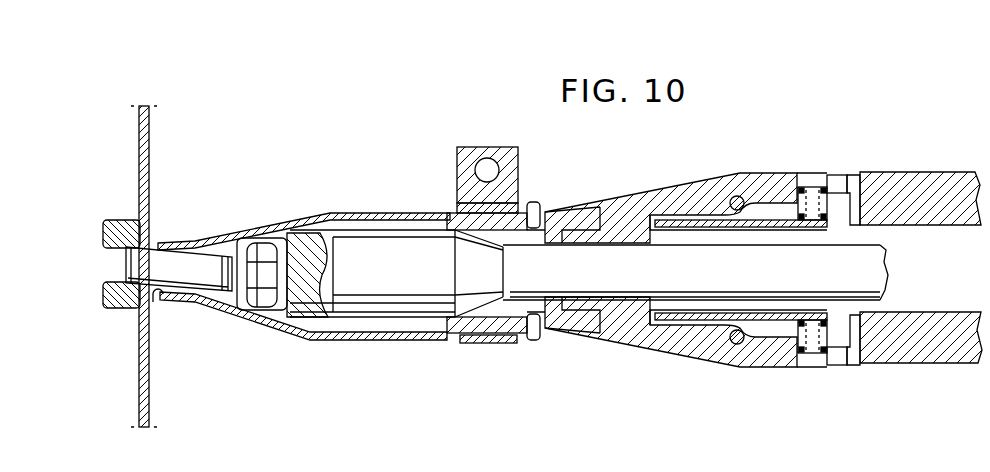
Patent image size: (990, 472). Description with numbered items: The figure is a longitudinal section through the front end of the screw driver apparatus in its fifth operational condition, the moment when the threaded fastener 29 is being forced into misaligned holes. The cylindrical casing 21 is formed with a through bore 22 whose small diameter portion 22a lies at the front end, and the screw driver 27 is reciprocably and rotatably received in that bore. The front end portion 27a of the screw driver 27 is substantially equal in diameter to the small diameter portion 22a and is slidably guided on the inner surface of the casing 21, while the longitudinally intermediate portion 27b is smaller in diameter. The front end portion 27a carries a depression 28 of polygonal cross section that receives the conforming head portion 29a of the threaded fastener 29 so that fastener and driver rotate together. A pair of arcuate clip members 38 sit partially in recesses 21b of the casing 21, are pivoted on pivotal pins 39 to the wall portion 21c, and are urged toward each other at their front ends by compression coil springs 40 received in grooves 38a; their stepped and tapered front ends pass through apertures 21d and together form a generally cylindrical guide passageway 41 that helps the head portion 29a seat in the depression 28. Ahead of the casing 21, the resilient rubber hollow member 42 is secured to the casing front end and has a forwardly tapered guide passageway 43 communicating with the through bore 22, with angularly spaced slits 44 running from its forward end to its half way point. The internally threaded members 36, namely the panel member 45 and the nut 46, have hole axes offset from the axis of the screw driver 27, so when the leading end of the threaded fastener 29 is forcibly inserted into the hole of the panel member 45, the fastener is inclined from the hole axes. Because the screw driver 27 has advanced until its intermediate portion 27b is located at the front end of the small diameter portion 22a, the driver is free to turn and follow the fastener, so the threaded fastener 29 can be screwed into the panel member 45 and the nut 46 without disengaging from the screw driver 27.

The cylindrical casing 21 is at (928, 365).
The recesses 21b is at (846, 220).
The wall portion 21c is at (855, 178).
The apertures 21d is at (536, 216).
The through bore 22 is at (935, 276).
The small diameter portion 22a is at (483, 316).
The screw driver 27 is at (408, 226).
The front end portion 27a is at (352, 230).
The longitudinally intermediate portion 27b is at (580, 210).
The depression 28 is at (298, 245).
The threaded fastener 29 is at (215, 240).
The head portion 29a is at (260, 245).
The internally threaded members 36 is at (142, 97).
The arcuate clip members 38 is at (752, 171).
The grooves 38a is at (795, 203).
The pivotal pins 39 is at (734, 197).
The compression coil springs 40 is at (822, 186).
The guide passageway 41 is at (587, 301).
The hollow member 42 is at (385, 213).
The guide passageway 43 is at (368, 327).
The slits 44 is at (157, 302).
The panel member 45 is at (150, 165).
The nut 46 is at (118, 219).